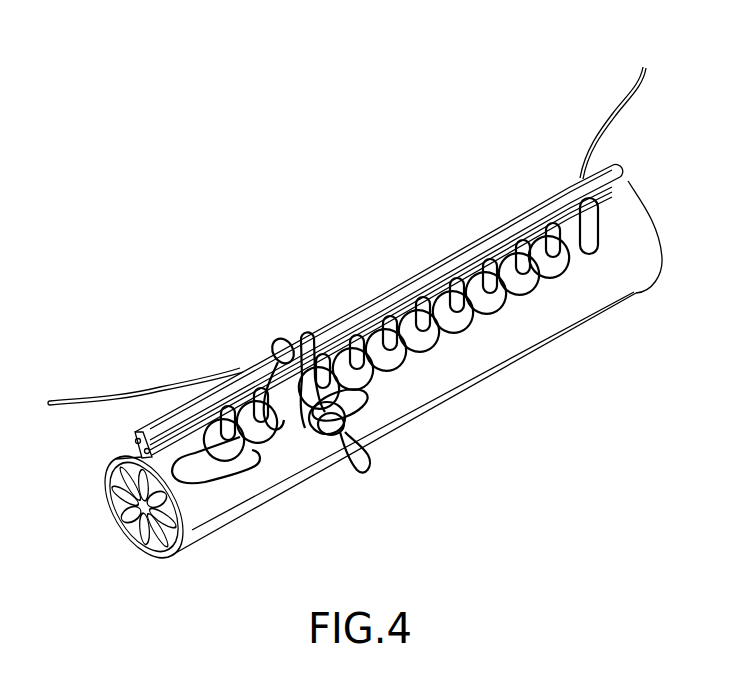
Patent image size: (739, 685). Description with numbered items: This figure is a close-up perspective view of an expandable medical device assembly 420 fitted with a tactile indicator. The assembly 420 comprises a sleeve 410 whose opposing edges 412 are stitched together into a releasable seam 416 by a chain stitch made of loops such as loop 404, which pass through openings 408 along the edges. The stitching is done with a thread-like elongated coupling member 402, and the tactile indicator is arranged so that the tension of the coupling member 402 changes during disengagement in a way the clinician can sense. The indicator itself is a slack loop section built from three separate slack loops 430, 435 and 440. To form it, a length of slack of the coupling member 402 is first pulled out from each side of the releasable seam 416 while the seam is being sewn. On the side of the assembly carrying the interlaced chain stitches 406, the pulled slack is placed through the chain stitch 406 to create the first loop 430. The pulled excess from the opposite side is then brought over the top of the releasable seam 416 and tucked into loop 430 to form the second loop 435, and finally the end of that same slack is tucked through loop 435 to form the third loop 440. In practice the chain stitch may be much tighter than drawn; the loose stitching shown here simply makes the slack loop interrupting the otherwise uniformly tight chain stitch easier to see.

The elongated coupling member 402 is at (120, 396).
The loop 404 is at (249, 458).
The interlaced chain stitches 406 is at (370, 382).
The openings 408 is at (258, 378).
The sleeve 410 is at (485, 352).
The opposing edges 412 is at (473, 245).
The releasable seam 416 is at (628, 165).
The assembly 420 is at (366, 160).
The slack loop 430 is at (348, 405).
The slack loop 435 is at (348, 422).
The slack loop 440 is at (369, 461).